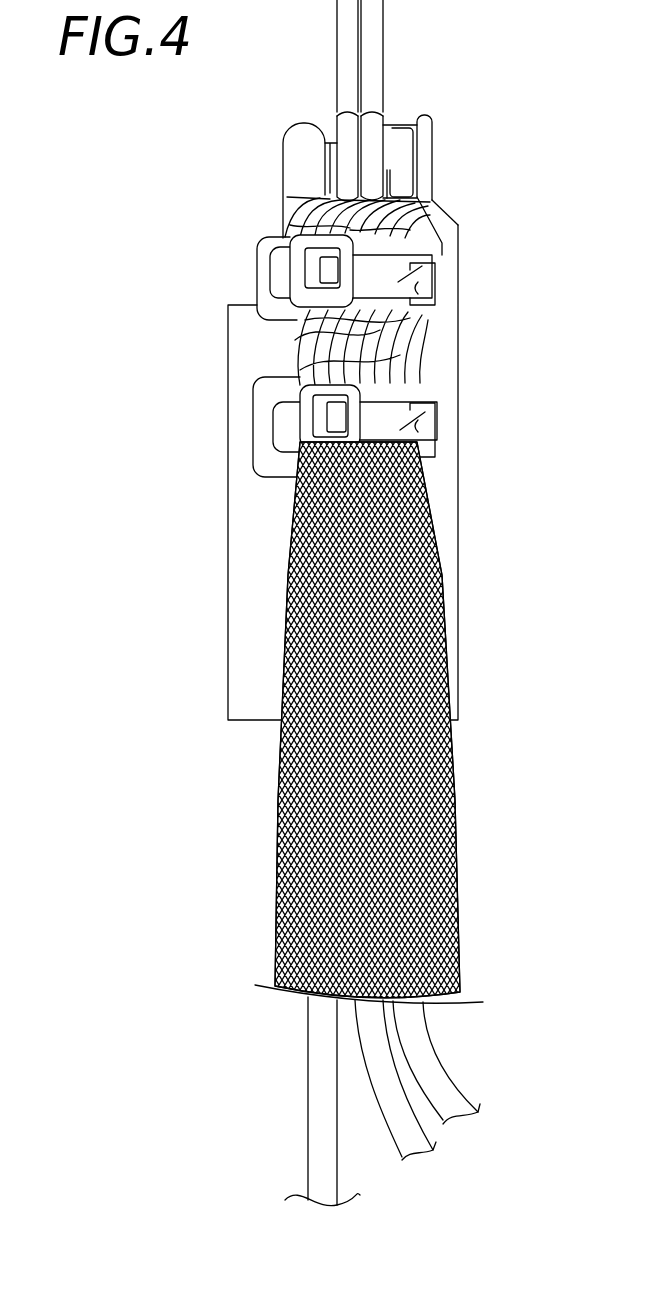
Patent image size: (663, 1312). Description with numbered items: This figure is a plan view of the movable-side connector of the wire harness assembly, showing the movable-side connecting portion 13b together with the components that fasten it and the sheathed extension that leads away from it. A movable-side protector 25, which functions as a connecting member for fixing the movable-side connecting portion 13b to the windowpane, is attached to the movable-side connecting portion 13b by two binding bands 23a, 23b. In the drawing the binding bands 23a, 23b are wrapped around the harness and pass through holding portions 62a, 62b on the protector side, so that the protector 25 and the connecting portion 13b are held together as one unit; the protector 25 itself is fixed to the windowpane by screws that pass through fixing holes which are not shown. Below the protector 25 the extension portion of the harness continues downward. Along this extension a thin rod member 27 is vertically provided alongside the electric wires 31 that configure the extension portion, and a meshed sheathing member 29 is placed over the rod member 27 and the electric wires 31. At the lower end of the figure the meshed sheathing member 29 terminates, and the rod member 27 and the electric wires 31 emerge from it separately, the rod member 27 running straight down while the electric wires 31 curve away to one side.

The movable-side connecting portion 13b is at (214, 271).
The binding band 23a is at (445, 262).
The binding band 23b is at (433, 457).
The first tie holding portion 62a is at (423, 292).
The second tie holding portion 62b is at (427, 412).
The movable-side protector 25 is at (257, 635).
The meshed sheathing member 29 is at (350, 832).
The rod member 27 is at (322, 1095).
The electric wires 31 is at (395, 1088).